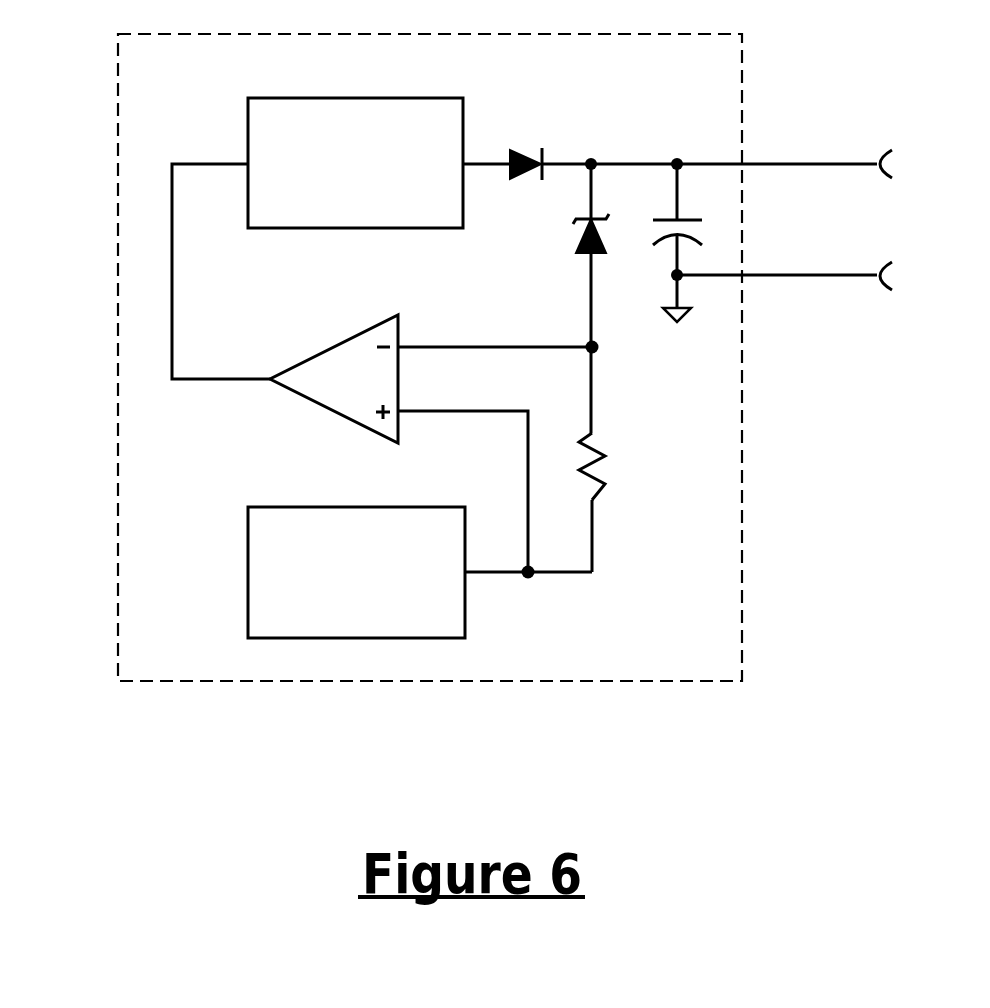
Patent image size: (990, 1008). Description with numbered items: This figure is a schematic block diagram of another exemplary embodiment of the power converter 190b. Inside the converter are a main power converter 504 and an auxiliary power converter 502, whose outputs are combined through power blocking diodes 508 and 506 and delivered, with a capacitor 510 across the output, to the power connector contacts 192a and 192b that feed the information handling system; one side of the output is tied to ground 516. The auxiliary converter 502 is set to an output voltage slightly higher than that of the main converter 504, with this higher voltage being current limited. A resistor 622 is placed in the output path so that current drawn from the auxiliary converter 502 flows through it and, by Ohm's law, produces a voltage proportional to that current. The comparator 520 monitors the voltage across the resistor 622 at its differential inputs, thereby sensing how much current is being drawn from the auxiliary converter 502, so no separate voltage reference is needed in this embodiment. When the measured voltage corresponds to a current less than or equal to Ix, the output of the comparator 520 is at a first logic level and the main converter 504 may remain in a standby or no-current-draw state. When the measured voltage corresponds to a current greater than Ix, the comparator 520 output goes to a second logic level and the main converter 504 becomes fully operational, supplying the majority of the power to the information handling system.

The power converter module 190b is at (742, 88).
The power connector contact 192a is at (888, 152).
The power connector contact 192b is at (890, 265).
The auxiliary power converter 502 is at (437, 507).
The main power converter 504 is at (452, 100).
The power blocking diode 506 is at (578, 252).
The power blocking diode 508 is at (527, 136).
The capacitor 510 is at (708, 203).
The ground 516 is at (687, 315).
The comparator 520 is at (352, 337).
The resistor 622 is at (608, 442).